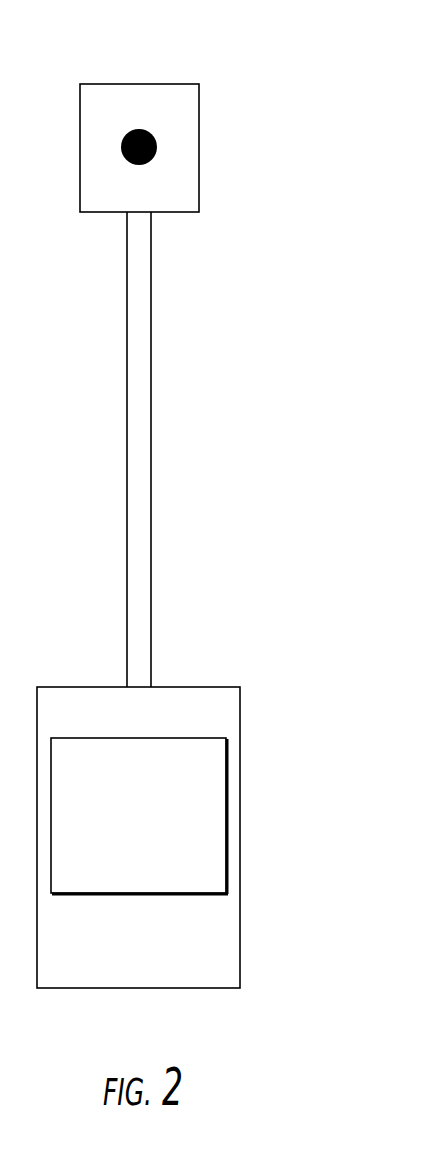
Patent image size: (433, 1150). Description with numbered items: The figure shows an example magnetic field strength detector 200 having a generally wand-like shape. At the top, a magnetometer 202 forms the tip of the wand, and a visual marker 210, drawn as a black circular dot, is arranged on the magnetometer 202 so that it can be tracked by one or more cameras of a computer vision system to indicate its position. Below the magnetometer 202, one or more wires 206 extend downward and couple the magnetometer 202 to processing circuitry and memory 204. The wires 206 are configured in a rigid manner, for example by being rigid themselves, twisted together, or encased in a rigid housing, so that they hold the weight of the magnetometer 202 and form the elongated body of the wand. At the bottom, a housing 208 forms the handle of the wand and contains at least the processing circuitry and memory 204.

The magnetic field strength detector 200 is at (156, 32).
The magnetometer 202 is at (199, 102).
The processing circuitry and memory 204 is at (156, 875).
The wires 206 is at (151, 248).
The housing 208 is at (240, 706).
The visual marker 210 is at (157, 145).